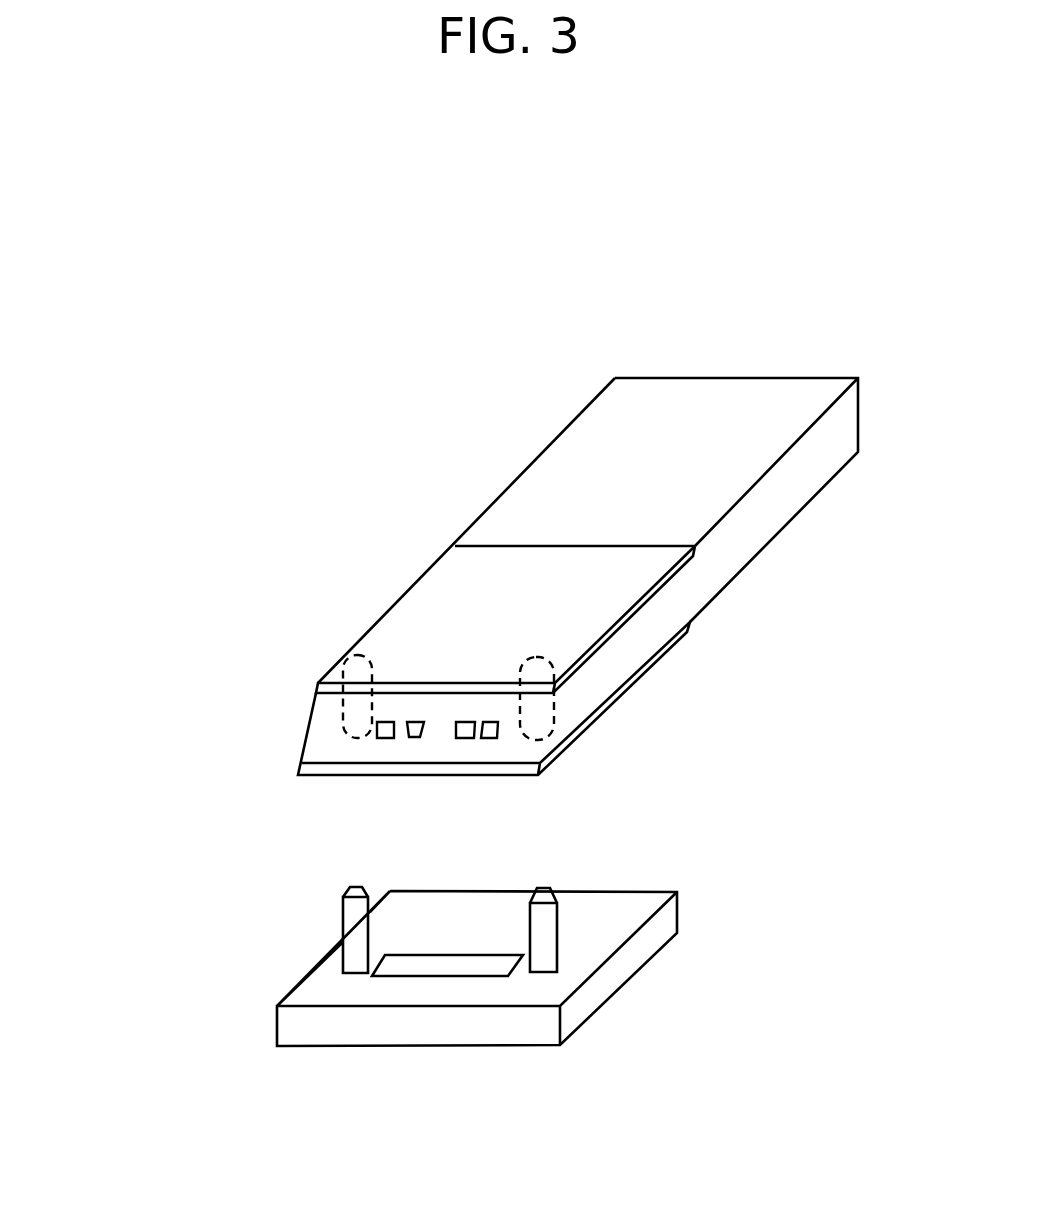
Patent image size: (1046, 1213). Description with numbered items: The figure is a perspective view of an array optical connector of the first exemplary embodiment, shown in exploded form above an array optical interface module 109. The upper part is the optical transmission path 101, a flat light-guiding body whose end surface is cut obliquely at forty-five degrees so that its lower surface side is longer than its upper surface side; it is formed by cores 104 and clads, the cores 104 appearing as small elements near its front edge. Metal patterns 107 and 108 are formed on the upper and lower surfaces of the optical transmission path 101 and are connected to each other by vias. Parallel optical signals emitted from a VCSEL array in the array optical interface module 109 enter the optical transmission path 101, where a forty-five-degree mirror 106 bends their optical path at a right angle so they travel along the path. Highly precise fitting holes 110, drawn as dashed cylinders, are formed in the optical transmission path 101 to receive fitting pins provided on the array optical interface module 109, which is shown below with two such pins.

The optical transmission path 101 is at (557, 497).
The metal pattern 108 is at (632, 585).
The metal pattern 107 is at (643, 675).
The 45-degree mirror 106 is at (330, 737).
The fitting holes 110 is at (553, 707).
The cores 104 is at (415, 732).
The array optical interface module 109 is at (613, 918).